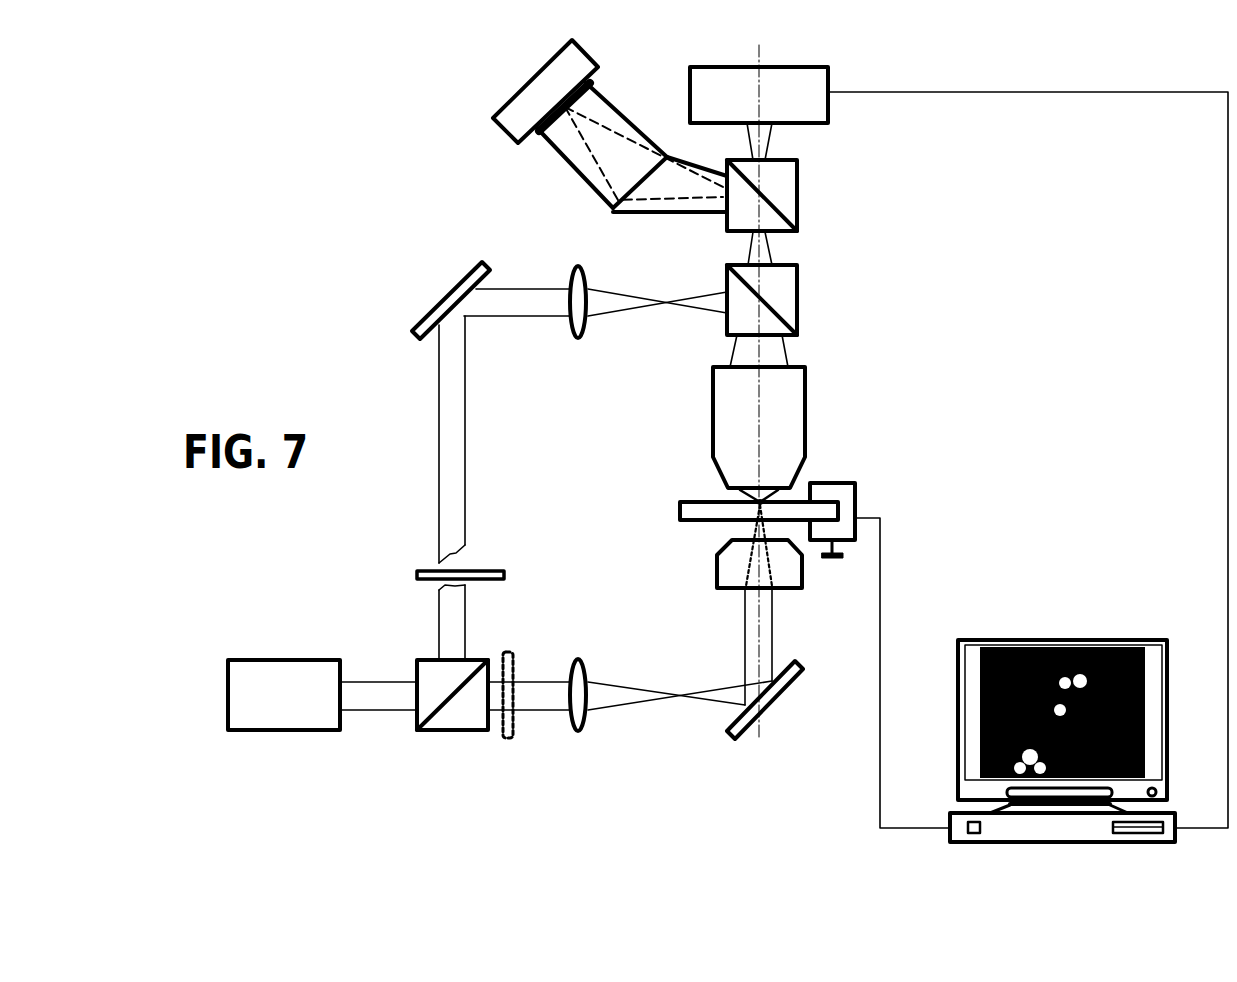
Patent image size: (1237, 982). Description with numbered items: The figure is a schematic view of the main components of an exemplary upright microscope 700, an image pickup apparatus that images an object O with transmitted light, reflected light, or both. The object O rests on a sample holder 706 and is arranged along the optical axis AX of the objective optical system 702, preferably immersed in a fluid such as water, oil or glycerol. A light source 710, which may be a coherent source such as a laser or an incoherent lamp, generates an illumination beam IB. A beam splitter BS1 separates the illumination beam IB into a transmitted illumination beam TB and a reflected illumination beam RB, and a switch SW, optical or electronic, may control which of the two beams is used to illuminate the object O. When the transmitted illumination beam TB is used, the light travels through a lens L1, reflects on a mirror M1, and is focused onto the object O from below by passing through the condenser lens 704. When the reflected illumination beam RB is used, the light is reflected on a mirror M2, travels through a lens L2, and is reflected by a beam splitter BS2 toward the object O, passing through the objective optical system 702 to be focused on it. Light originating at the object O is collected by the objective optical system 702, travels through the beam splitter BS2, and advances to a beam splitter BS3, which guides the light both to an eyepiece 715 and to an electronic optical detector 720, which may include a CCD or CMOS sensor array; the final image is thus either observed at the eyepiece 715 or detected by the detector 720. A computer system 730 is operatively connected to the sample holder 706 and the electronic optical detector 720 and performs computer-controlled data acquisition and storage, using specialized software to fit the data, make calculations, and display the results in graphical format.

The upright microscope 700 is at (358, 185).
The eyepiece 715 is at (490, 120).
The electronic optical detector 720 is at (830, 110).
The beam splitter BS3 is at (798, 197).
The beam splitter BS2 is at (797, 298).
The beam splitter BS1 is at (450, 735).
The mirror M2 is at (437, 300).
The mirror M1 is at (790, 687).
The lens L2 is at (580, 338).
The lens L1 is at (578, 733).
The objective optical system 702 is at (718, 423).
The object O is at (757, 502).
The sample holder 706 is at (845, 483).
The condenser lens 704 is at (717, 567).
The optical axis AX is at (760, 602).
The light source 710 is at (277, 733).
The illumination beam IB is at (373, 712).
The transmitted illumination beam TB is at (532, 712).
The reflected illumination beam RB is at (437, 610).
The switch SW is at (505, 577).
The computer system 730 is at (1147, 637).